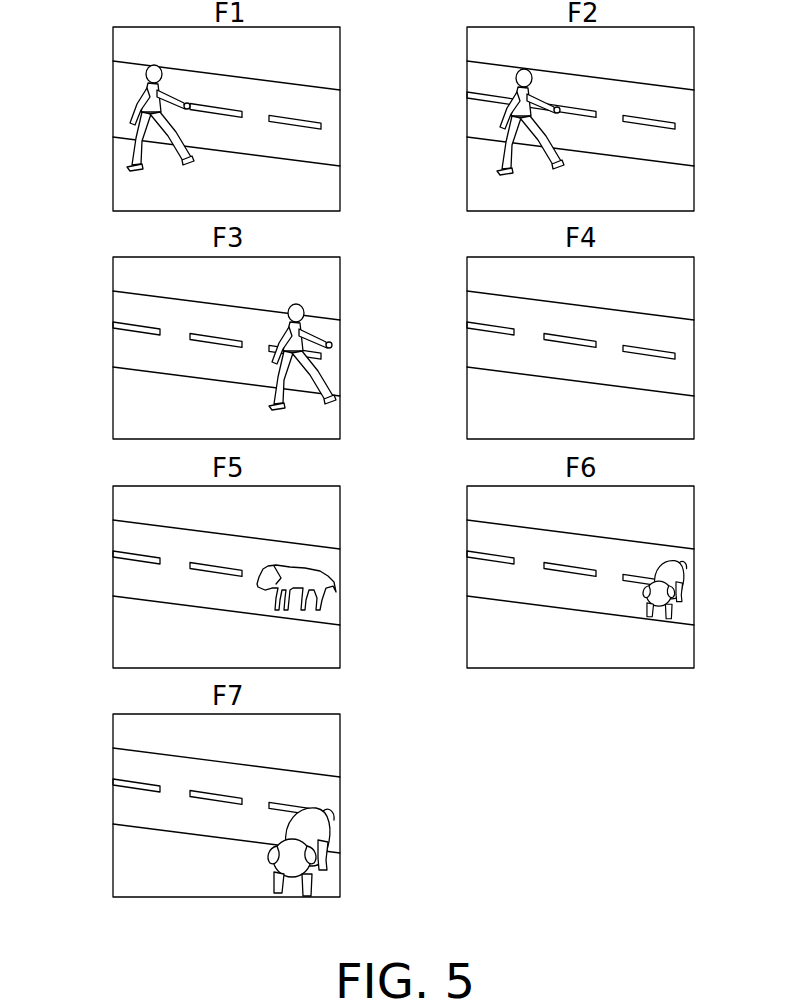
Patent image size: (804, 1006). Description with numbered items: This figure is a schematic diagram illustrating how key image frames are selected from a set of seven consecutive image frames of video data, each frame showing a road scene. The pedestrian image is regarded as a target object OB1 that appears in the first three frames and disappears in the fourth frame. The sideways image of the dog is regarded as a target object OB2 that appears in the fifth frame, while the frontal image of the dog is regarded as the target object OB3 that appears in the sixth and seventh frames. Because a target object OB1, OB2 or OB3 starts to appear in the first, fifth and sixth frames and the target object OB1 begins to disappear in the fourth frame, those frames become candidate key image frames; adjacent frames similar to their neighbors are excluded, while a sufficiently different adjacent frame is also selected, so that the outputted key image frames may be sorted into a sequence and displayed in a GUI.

The target object OB1 is at (137, 94).
The target object OB2 is at (327, 597).
The target object OB3 is at (683, 572).